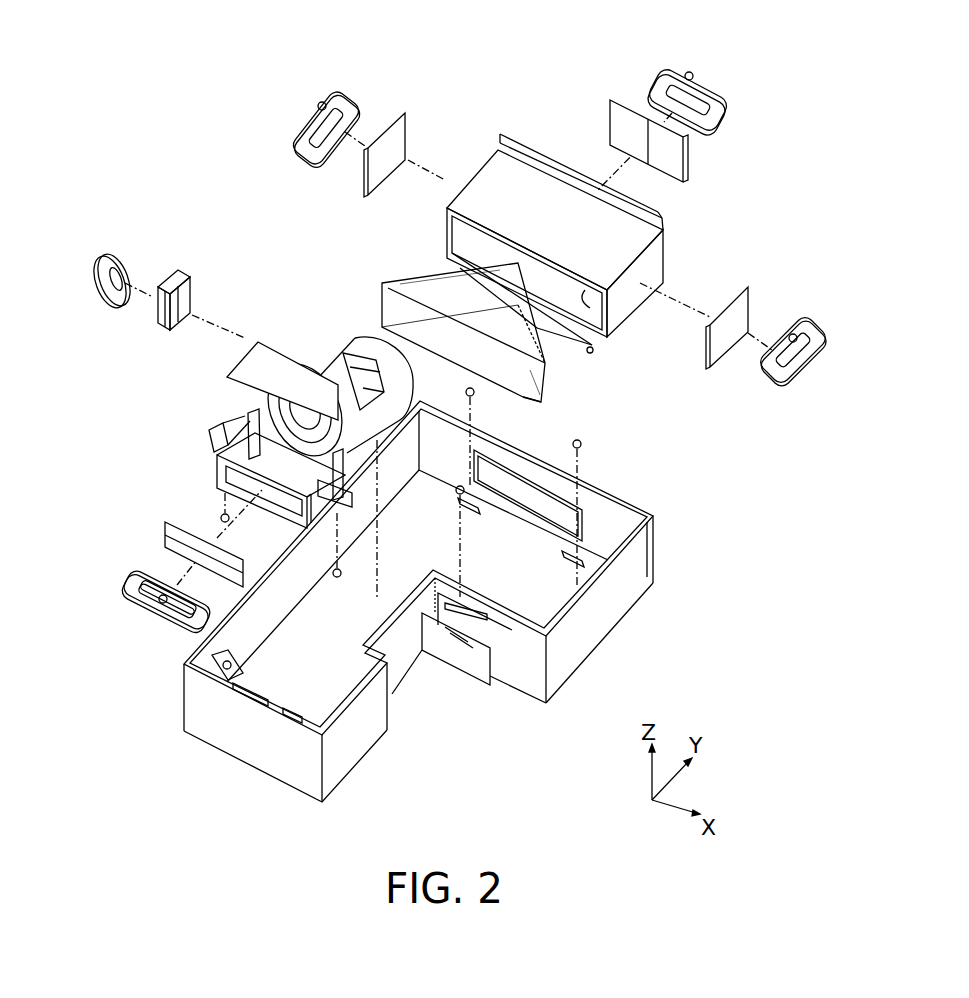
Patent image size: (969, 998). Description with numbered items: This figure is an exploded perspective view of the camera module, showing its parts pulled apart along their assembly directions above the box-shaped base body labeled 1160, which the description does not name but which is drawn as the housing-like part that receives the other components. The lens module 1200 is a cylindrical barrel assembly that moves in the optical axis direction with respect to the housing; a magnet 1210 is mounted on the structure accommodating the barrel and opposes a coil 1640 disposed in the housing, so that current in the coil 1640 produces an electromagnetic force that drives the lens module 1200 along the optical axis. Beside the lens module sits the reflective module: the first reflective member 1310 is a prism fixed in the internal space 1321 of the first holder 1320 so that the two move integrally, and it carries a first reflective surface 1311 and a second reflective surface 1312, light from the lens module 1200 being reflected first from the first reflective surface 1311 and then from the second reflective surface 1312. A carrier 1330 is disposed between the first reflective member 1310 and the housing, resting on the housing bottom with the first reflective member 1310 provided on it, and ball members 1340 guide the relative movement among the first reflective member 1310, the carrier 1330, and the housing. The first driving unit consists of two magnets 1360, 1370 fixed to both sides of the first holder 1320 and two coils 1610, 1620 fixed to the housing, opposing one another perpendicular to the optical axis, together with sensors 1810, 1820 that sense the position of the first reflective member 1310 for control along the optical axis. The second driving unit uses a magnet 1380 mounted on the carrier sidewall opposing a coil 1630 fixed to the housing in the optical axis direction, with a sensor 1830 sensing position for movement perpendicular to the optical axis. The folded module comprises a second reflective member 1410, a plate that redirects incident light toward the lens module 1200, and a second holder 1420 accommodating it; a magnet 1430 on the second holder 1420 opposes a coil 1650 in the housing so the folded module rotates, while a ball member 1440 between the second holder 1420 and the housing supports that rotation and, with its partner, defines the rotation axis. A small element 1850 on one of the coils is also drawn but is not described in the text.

The housing 1160 is at (645, 555).
The lens module 1200 is at (318, 348).
The magnet 1210 is at (177, 270).
The first reflective member 1310 is at (382, 305).
The first reflective surface 1311 is at (417, 270).
The second reflective surface 1312 is at (556, 403).
The first holder 1320 is at (500, 172).
The internal space 1321 is at (592, 353).
The carrier 1330 is at (560, 140).
The ball members 1340 is at (583, 445).
The magnet 1360 is at (730, 300).
The magnet 1370 is at (393, 118).
The magnet 1380 is at (690, 152).
The second reflective member 1410 is at (237, 367).
The second holder 1420 is at (213, 437).
The magnet 1430 is at (178, 538).
The ball member 1440 is at (221, 516).
The coil 1610 is at (803, 372).
The coil 1620 is at (337, 92).
The coil 1630 is at (722, 113).
The coil 1640 is at (114, 252).
The coil 1650 is at (127, 583).
The sensor 1810 is at (793, 334).
The sensor 1820 is at (318, 106).
The sensor 1830 is at (689, 72).
The protrusion of sealing member 1850 is at (162, 603).